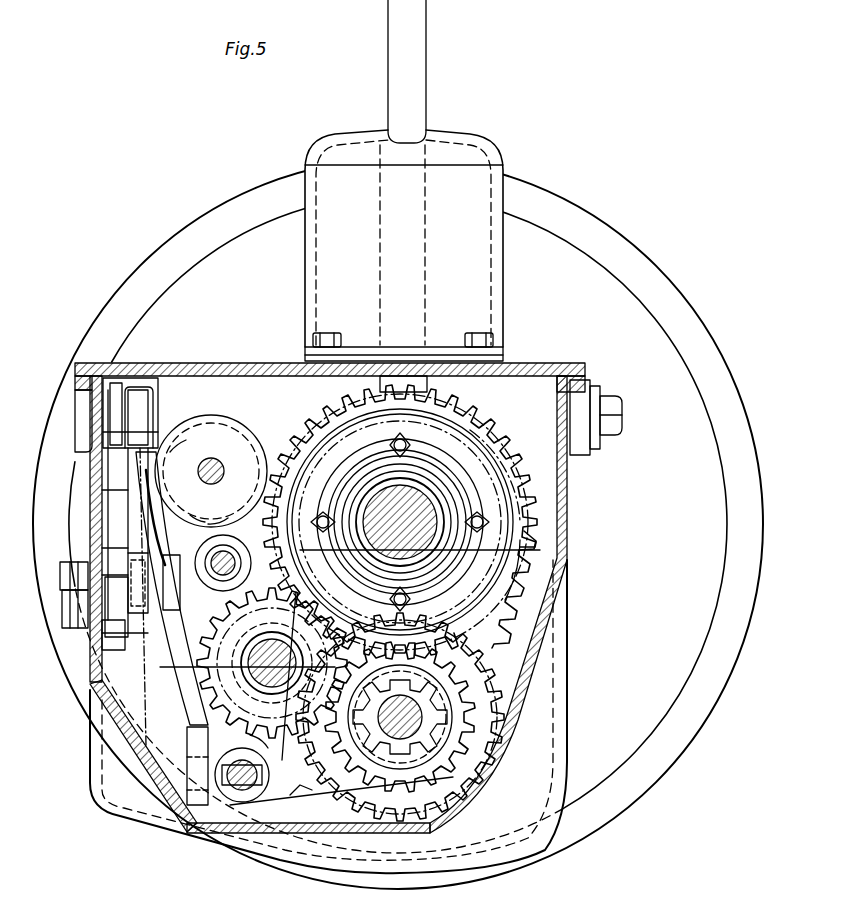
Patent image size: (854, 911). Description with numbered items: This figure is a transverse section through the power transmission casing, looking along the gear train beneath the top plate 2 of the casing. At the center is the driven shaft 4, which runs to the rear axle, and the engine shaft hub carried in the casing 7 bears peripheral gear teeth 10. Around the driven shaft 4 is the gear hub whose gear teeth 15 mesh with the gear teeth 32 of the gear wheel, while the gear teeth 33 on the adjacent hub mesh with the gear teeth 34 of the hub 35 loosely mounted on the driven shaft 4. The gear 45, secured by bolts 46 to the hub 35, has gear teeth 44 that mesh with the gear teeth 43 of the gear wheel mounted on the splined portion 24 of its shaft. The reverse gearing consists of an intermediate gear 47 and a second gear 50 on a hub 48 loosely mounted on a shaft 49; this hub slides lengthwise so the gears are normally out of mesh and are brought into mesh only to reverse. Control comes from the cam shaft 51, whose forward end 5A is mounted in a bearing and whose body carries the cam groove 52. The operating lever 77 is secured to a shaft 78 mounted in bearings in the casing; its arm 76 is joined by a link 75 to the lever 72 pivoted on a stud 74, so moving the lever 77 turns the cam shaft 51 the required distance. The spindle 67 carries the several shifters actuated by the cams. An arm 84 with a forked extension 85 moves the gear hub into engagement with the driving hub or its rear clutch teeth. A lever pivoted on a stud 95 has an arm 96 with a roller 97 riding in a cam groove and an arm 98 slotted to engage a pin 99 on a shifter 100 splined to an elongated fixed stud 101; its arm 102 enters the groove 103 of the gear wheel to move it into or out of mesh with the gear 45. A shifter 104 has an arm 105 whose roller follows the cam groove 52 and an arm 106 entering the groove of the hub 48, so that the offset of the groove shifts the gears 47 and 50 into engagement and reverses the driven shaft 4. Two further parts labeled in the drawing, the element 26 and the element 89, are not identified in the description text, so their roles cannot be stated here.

The top plate 2 is at (249, 363).
The driven shaft 4 is at (433, 516).
The forward end of cam shaft 5A is at (219, 474).
The casing 7 is at (560, 538).
The gear teeth 10 is at (540, 550).
The gear teeth 15 is at (540, 577).
The splined portion 24 is at (505, 795).
The splined hub 26 is at (540, 663).
The gear teeth 32 is at (545, 640).
The gear teeth 33 is at (505, 700).
The gear teeth 34 is at (540, 494).
The hub 35 is at (352, 562).
The gear teeth 43 is at (470, 732).
The gear teeth 44 is at (535, 468).
The gear 45 is at (320, 436).
The bolts 46 is at (410, 472).
The intermediate gear 47 is at (222, 625).
The hub 48 is at (250, 738).
The shaft 49 is at (160, 667).
The second gear 50 is at (224, 650).
The cam shaft 51 is at (236, 421).
The cam groove 52 is at (212, 424).
The spindle 67 is at (268, 553).
The lever 72 is at (133, 640).
The stud 74 is at (62, 620).
The link 75 is at (128, 490).
The arm 76 is at (158, 403).
The operating lever 77 is at (427, 76).
The shaft 78 is at (528, 400).
The arm 84 is at (244, 548).
The forked extension 85 is at (338, 496).
The bearing shaft 89 is at (230, 553).
The stud 95 is at (168, 560).
The arm 96 is at (153, 528).
The roller 97 is at (168, 448).
The arm 98 is at (183, 686).
The pin 99 is at (186, 772).
The shifter 100 is at (240, 792).
The fixed stud 101 is at (249, 802).
The arm 102 is at (305, 792).
The groove 103 is at (396, 816).
The shifter 104 is at (216, 528).
The arm 105 is at (196, 522).
The arm 106 is at (224, 600).